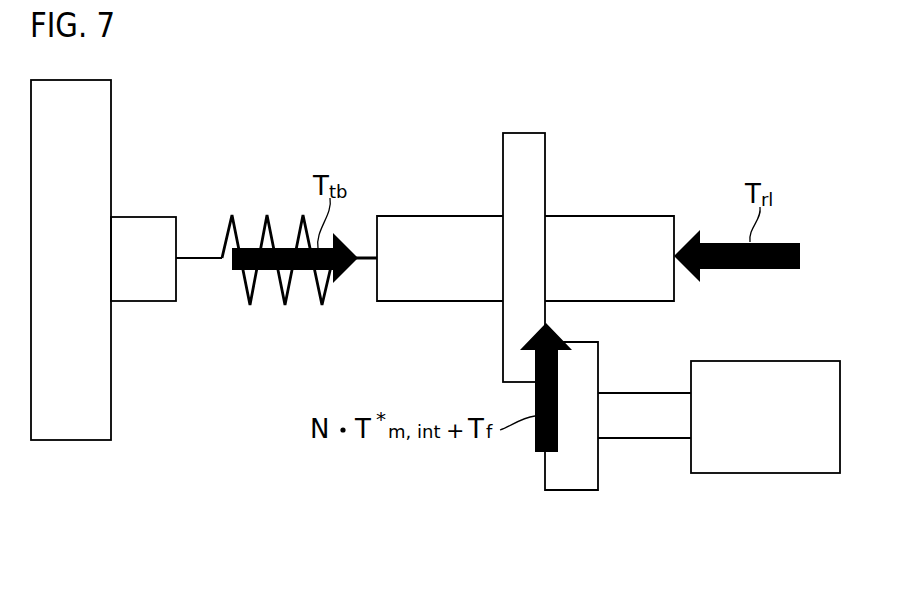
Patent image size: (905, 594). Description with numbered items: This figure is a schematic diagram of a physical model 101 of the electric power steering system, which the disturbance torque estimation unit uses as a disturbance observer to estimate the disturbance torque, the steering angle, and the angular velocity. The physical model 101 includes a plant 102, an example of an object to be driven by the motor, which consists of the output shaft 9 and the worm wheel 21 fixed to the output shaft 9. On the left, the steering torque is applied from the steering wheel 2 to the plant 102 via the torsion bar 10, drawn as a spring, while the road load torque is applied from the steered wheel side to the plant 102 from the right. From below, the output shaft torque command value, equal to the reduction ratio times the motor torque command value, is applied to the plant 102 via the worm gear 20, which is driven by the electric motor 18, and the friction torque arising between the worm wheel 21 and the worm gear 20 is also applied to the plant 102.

The steering wheel 2 is at (71, 440).
The torsion bar 10 is at (283, 305).
The output shaft 9 is at (612, 216).
The worm wheel 21 is at (523, 133).
The plant 102 is at (488, 74).
The worm gear 20 is at (572, 490).
The electric motor 18 is at (765, 473).
The physical model 101 is at (371, 580).